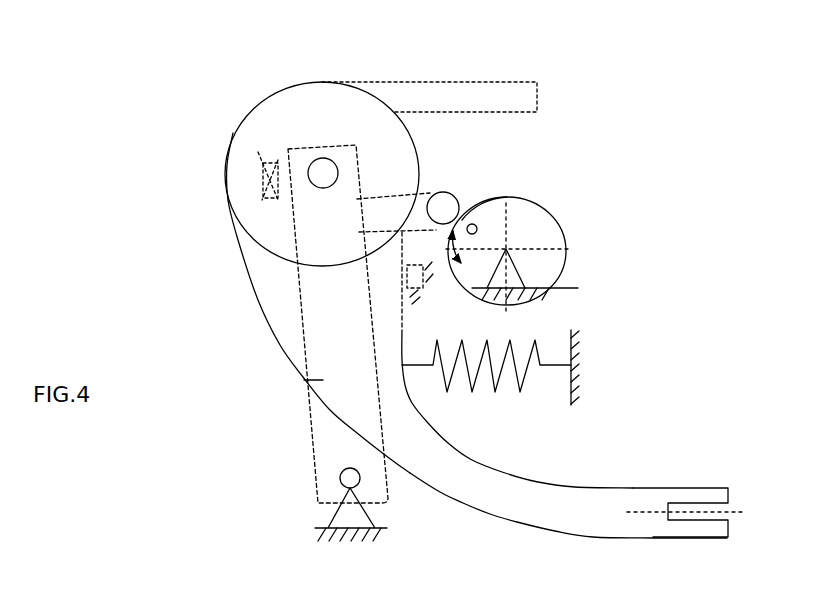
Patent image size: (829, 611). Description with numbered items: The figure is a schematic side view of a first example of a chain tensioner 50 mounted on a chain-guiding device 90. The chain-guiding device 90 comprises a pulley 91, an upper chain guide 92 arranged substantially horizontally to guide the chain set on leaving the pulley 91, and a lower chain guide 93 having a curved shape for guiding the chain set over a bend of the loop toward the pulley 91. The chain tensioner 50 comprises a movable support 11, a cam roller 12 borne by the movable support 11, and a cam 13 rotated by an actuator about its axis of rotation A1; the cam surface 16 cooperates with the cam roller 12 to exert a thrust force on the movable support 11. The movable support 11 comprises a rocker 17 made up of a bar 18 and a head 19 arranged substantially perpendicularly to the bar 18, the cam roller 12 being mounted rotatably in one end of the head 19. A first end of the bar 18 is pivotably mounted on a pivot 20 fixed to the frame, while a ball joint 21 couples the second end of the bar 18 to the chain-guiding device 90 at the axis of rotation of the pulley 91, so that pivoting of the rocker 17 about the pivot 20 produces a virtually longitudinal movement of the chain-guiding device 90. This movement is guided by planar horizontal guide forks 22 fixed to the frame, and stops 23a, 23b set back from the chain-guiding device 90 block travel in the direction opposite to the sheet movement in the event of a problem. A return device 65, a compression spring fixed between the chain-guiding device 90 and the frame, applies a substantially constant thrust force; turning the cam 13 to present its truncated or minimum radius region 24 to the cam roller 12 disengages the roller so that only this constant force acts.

The chain-guiding device 90 is at (219, 60).
The pulley 91 is at (230, 157).
The upper chain guide 92 is at (435, 92).
The lower chain guide 93 is at (514, 521).
The chain tensioner 50 is at (602, 167).
The cam 13 is at (566, 236).
The cam surface 16 is at (490, 204).
The axis of rotation of the actuator A1 is at (505, 249).
The truncated or minimum radius region 24 is at (459, 260).
The movable support 11 is at (270, 452).
The head 19 is at (390, 212).
The ball joint 21 is at (324, 172).
The cam roller 12 is at (460, 210).
The stop 23a is at (265, 183).
The stop 23b is at (412, 295).
The rocker 17 is at (322, 353).
The bar 18 is at (312, 381).
The pivot 20 is at (349, 492).
The return device 65 is at (502, 417).
The guide fork 22 is at (689, 497).